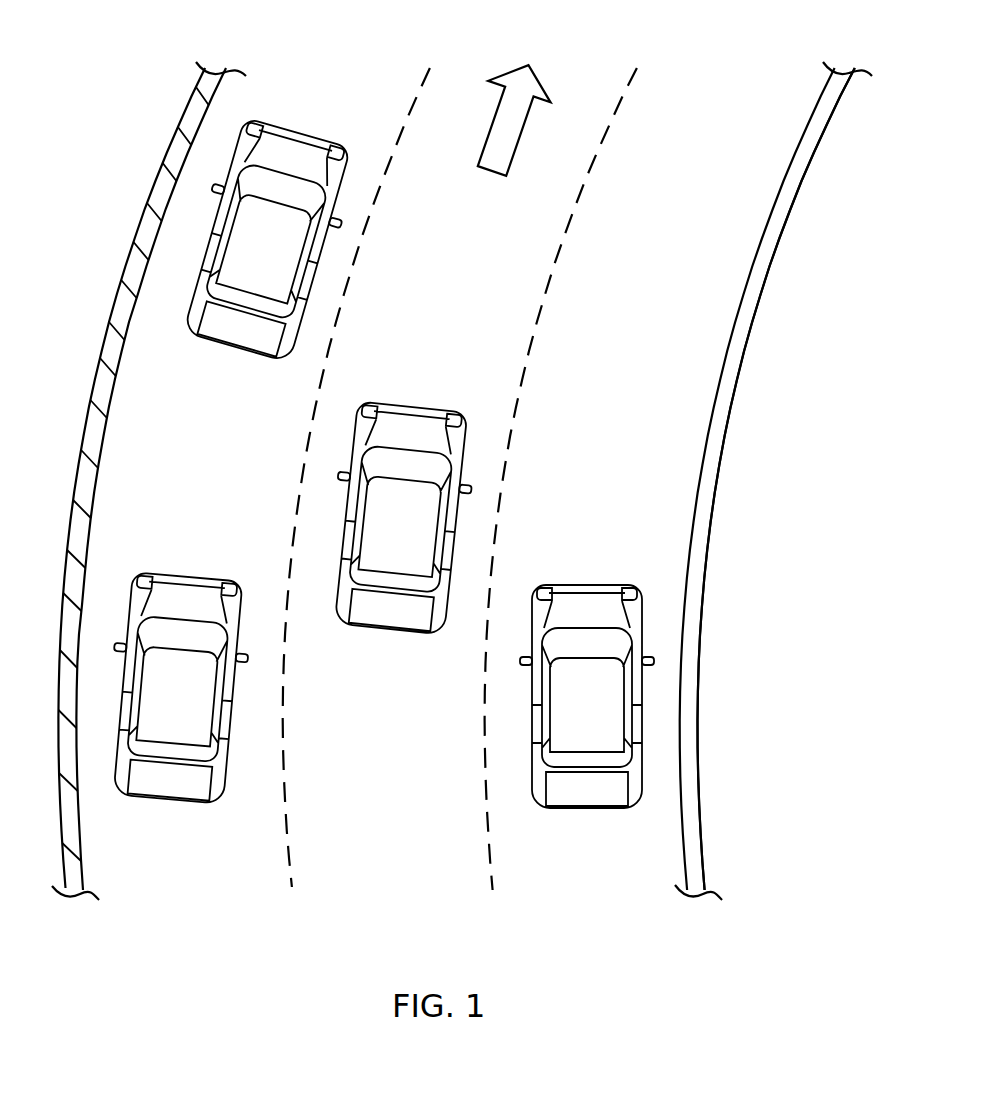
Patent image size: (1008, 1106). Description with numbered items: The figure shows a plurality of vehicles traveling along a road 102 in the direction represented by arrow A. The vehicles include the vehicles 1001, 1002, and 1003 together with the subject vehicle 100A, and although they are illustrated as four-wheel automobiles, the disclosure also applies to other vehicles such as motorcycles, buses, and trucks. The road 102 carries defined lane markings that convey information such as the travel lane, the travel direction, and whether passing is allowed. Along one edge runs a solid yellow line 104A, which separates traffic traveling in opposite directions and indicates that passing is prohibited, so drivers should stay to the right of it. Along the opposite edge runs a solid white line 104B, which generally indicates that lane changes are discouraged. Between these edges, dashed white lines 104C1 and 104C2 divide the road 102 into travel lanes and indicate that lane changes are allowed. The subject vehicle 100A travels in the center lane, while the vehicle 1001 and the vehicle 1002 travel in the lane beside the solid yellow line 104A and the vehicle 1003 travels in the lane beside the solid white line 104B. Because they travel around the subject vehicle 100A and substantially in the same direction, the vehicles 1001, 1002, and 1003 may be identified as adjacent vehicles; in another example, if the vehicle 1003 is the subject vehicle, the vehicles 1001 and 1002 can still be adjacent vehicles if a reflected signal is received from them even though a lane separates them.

The vehicle 1001 is at (296, 121).
The vehicle 1002 is at (187, 573).
The vehicle 1003 is at (573, 584).
The subject vehicle 100A is at (398, 403).
The road 102 is at (742, 382).
The solid yellow line 104A is at (105, 434).
The solid white line 104B is at (713, 527).
The dashed white line 104C1 is at (371, 201).
The dashed white line 104C2 is at (583, 189).
The arrow A is at (533, 82).